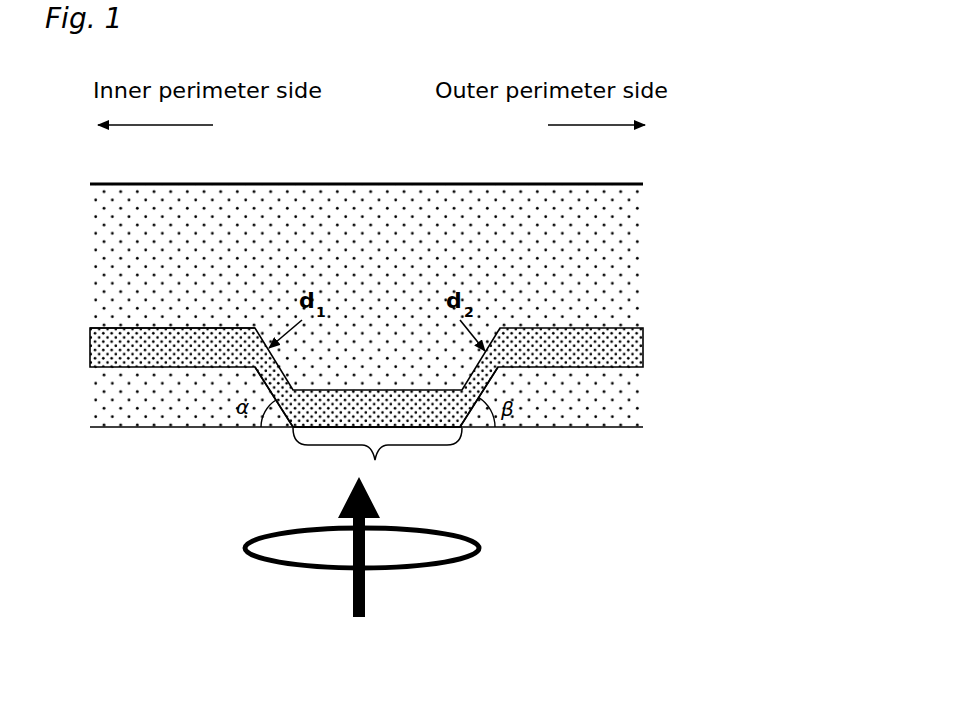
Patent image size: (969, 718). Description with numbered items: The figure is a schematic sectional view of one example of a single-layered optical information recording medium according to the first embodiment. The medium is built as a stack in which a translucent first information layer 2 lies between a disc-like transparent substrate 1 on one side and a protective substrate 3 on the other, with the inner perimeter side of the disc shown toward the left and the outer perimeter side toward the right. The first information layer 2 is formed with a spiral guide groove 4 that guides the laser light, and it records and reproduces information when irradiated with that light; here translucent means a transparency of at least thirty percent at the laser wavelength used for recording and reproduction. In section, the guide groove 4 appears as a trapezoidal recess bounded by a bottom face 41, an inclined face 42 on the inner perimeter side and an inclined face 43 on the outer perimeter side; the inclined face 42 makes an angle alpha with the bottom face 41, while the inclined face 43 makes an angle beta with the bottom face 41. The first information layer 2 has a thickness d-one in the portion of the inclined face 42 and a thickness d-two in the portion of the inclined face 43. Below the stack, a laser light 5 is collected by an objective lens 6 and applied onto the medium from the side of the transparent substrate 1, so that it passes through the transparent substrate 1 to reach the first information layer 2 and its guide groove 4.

The transparent substrate 1 is at (645, 402).
The first information layer 2 is at (645, 332).
The protective substrate 3 is at (645, 235).
The guide groove 4 is at (450, 452).
The bottom face 41 is at (335, 425).
The inclined face on the inner perimeter side 42 is at (254, 371).
The inclined face on the outer perimeter side 43 is at (501, 371).
The laser light 5 is at (365, 592).
The objective lens 6 is at (480, 548).